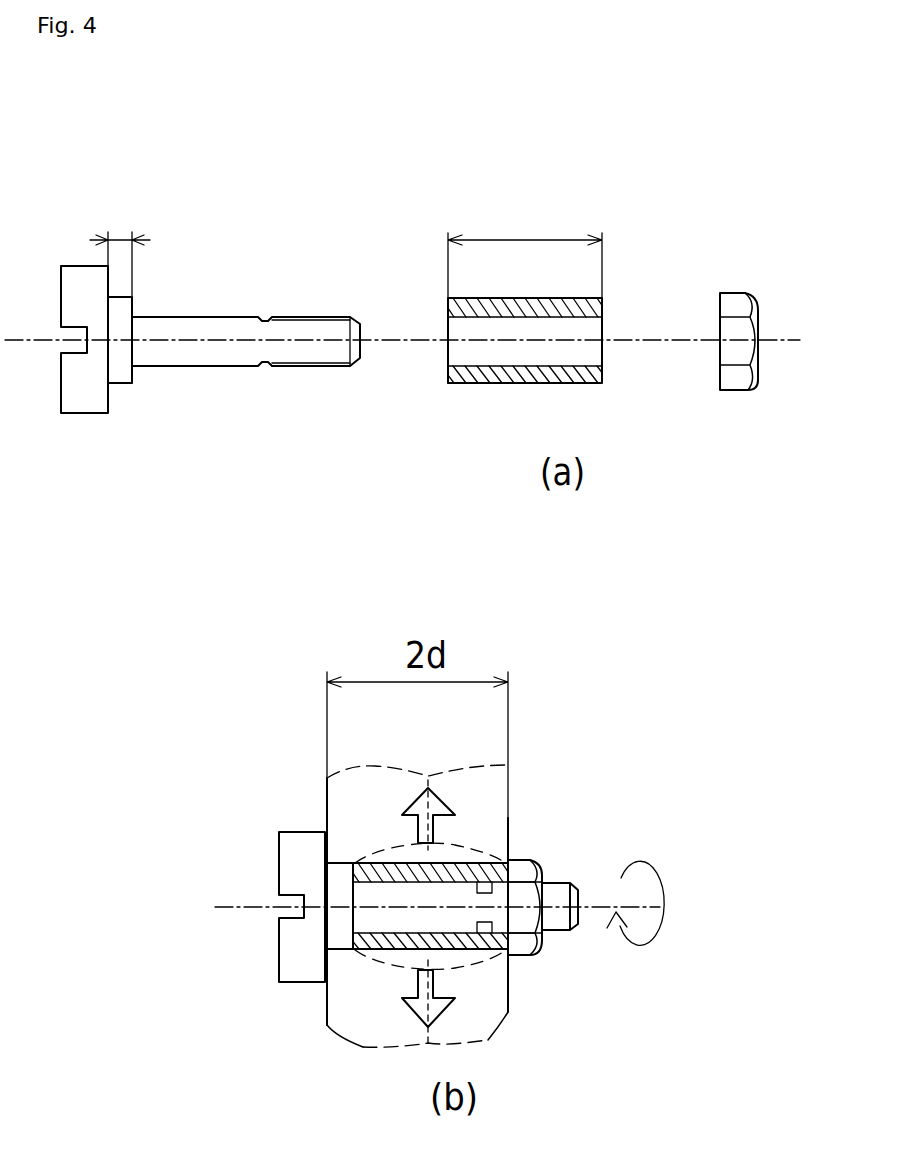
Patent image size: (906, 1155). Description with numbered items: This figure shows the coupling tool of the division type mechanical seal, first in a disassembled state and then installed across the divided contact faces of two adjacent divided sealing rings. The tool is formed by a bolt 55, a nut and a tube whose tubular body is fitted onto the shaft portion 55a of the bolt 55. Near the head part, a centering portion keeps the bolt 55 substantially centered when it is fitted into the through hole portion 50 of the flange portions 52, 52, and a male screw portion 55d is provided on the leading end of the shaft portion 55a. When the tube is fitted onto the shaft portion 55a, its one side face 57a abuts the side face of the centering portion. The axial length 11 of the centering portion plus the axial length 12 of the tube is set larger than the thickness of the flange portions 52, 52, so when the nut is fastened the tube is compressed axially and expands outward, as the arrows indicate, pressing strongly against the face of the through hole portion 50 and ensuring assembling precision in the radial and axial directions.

The through hole portion 50 is at (446, 883).
The flange portion 52 is at (337, 793).
The bolt 55 is at (206, 329).
The shaft portion 55a is at (237, 356).
The male screw portion 55d is at (332, 367).
The side face of tube 57a is at (447, 372).
The axial length l1 of centering portion 11 is at (120, 242).
The axial length l2 of tube 12 is at (525, 246).